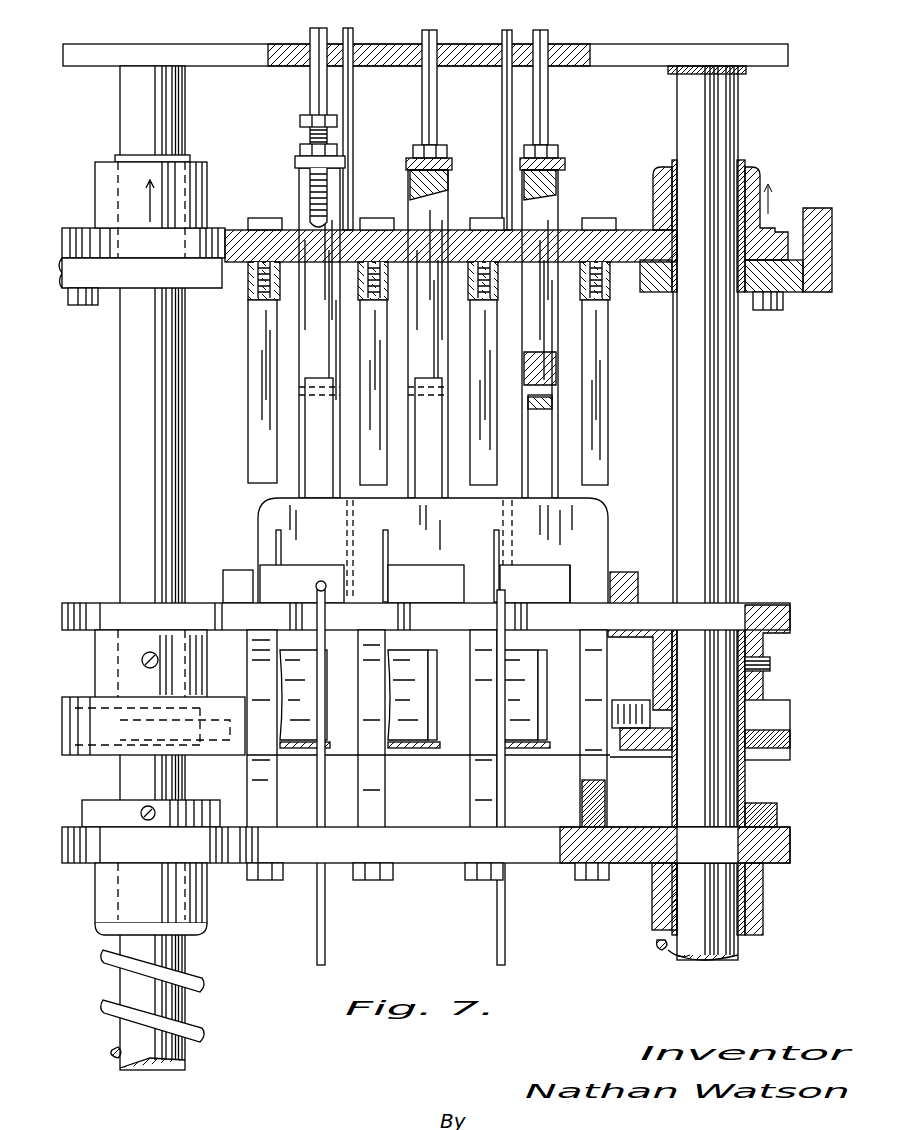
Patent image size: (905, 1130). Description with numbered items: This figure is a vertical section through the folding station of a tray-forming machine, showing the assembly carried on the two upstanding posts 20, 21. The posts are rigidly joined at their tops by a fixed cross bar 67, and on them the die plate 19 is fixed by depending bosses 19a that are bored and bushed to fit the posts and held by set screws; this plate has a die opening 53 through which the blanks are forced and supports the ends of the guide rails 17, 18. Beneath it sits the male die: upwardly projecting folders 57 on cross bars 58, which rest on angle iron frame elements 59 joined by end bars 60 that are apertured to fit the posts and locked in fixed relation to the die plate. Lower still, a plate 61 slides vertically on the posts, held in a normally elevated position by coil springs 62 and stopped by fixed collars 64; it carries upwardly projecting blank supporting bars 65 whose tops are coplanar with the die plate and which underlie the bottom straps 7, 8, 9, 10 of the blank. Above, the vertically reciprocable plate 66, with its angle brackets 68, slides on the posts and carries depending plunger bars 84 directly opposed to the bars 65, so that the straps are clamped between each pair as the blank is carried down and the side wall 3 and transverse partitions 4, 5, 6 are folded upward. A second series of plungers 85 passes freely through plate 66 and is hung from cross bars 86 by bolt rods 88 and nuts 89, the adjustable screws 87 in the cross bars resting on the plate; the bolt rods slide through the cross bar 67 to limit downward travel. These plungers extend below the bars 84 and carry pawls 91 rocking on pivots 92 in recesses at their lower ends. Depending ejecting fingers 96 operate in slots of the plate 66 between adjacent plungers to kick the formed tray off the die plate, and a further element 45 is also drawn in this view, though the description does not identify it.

The side wall 3 is at (452, 532).
The transverse partition 4 is at (282, 540).
The transverse partition 5 is at (383, 548).
The transverse partition 6 is at (494, 548).
The bottom strap 7 is at (302, 582).
The bottom strap 8 is at (378, 598).
The bottom strap 9 is at (493, 598).
The bottom strap 10 is at (580, 598).
The guide rail 17 is at (238, 568).
The guide rail 18 is at (626, 570).
The die plate 19 is at (68, 600).
The depending boss 19a is at (95, 678).
The upstanding post 20 is at (120, 480).
The upstanding post 21 is at (740, 503).
The actuating rod 45 is at (536, 935).
The die opening 53 is at (640, 605).
The folder 57 is at (284, 690).
The cross bar 58 is at (302, 750).
The angle iron frame element 59 is at (790, 712).
The end bar 60 is at (218, 720).
The slidable plate 61 is at (790, 850).
The coil spring 62 is at (205, 980).
The collar 64 is at (105, 800).
The blank supporting bar 65 is at (247, 775).
The vertically reciprocable plate 66 is at (65, 248).
The cross bar 67 is at (255, 46).
The angle bracket 68 is at (58, 312).
The plunger bar 84 is at (257, 350).
The plunger 85 is at (299, 345).
The cross bar 86 is at (295, 162).
The adjustable screw 87 is at (308, 190).
The bolt rod 88 is at (420, 80).
The nut 89 is at (337, 150).
The pawl 91 is at (310, 450).
The pivot 92 is at (556, 400).
The ejecting finger 96 is at (353, 112).